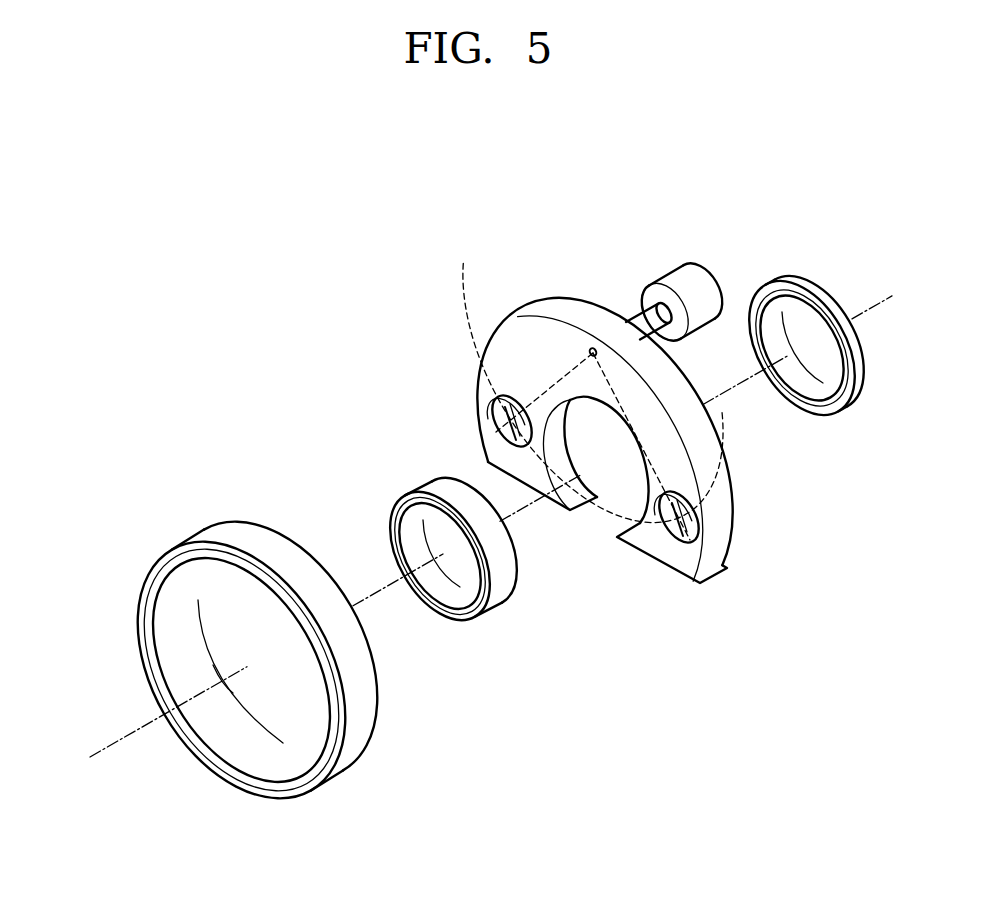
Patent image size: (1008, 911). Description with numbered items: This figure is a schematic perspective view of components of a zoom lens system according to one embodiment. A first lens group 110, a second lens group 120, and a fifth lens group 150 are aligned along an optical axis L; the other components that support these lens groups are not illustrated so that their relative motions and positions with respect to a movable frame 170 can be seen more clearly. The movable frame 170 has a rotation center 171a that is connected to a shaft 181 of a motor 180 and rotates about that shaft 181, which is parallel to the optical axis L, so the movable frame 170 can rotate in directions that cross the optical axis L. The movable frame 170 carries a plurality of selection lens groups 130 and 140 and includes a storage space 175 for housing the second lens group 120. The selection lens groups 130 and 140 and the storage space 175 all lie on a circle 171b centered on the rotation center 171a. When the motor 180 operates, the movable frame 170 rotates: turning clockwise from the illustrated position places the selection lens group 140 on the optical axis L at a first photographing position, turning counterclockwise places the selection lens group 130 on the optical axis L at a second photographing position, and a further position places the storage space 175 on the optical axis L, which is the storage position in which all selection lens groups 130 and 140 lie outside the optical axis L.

The first lens group 110 is at (183, 523).
The second lens group 120 is at (412, 484).
The selection lens group 130 is at (500, 420).
The selection lens group 140 is at (678, 540).
The fifth lens group 150 is at (768, 280).
The movable frame 170 is at (527, 308).
The rotation center 171a is at (593, 349).
The circle 171b is at (463, 303).
The storage space 175 is at (617, 478).
The motor 180 is at (672, 262).
The shaft 181 is at (637, 322).
The optical axis L is at (121, 740).